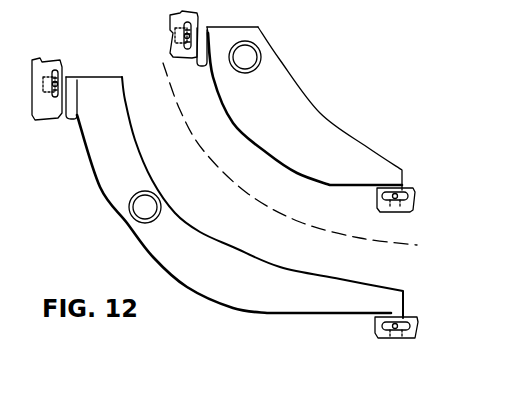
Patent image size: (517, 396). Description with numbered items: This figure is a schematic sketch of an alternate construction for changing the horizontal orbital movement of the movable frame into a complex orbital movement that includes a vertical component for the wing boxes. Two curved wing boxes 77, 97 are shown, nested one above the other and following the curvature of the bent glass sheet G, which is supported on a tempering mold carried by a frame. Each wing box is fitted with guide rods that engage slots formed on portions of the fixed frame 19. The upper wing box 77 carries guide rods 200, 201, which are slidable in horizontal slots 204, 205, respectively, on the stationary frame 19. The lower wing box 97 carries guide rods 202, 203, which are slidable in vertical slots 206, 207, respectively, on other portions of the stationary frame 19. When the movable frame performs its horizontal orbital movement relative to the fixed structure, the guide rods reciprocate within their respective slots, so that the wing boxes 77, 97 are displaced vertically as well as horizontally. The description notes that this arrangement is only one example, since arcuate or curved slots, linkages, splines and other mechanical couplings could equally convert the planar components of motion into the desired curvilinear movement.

The wing box 97 is at (102, 188).
The wing box 77 is at (320, 113).
The fixed frame 19 is at (165, 30).
The vertical slot 206 is at (57, 60).
The guide rod 203 is at (180, 38).
The guide rod 201 is at (397, 197).
The horizontal slot 204 is at (377, 325).
The guide rod 202 is at (67, 83).
The vertical slot 207 is at (187, 47).
The horizontal slot 205 is at (380, 194).
The guide rod 200 is at (393, 323).
The bent glass sheet G is at (172, 93).